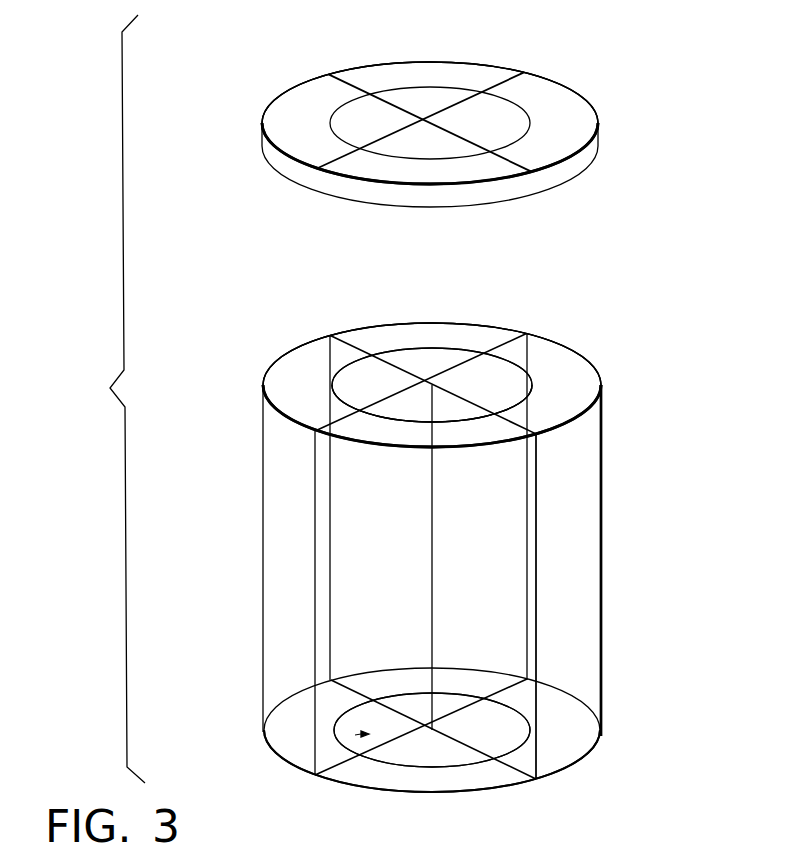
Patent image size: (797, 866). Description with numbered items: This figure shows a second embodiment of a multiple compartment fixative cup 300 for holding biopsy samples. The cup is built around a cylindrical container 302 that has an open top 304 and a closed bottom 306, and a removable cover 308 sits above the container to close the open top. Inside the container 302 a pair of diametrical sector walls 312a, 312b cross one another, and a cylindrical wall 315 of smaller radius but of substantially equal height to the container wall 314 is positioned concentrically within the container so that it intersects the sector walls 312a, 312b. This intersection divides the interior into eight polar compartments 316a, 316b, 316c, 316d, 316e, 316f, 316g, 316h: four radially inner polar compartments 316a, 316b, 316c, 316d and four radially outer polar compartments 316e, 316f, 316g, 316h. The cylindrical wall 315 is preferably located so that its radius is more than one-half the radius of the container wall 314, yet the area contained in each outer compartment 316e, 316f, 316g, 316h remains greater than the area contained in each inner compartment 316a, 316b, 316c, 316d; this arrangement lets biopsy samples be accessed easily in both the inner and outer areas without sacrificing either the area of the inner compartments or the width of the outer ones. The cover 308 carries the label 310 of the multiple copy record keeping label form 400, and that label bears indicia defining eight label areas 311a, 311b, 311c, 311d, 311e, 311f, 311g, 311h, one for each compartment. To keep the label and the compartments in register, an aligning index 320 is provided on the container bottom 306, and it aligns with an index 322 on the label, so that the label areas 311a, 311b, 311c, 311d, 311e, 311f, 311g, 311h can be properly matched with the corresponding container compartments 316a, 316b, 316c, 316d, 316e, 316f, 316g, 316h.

The multiple compartment fixative cup 300 is at (88, 391).
The cylindrical container 302 is at (625, 632).
The open top 304 is at (545, 337).
The closed bottom 306 is at (447, 790).
The removable cover 308 is at (616, 112).
The label 310 is at (305, 75).
The label area 311a is at (330, 123).
The label area 311b is at (452, 93).
The label area 311c is at (513, 132).
The label area 311d is at (425, 150).
The label area 311e is at (302, 152).
The label area 311f is at (415, 73).
The label area 311g is at (563, 97).
The label area 311h is at (488, 172).
The diametrical sector wall 312a is at (495, 372).
The diametrical sector wall 312b is at (480, 403).
The container wall 314 is at (605, 577).
The cylindrical wall 315 is at (540, 657).
The polar compartment 316a is at (360, 387).
The polar compartment 316b is at (423, 360).
The polar compartment 316c is at (497, 382).
The polar compartment 316d is at (403, 412).
The polar compartment 316e is at (292, 370).
The polar compartment 316f is at (483, 330).
The polar compartment 316g is at (540, 418).
The polar compartment 316h is at (473, 430).
The aligning index 320 is at (335, 753).
The index 322 is at (363, 132).
The multiple copy record keeping label form 400 is at (672, 859).